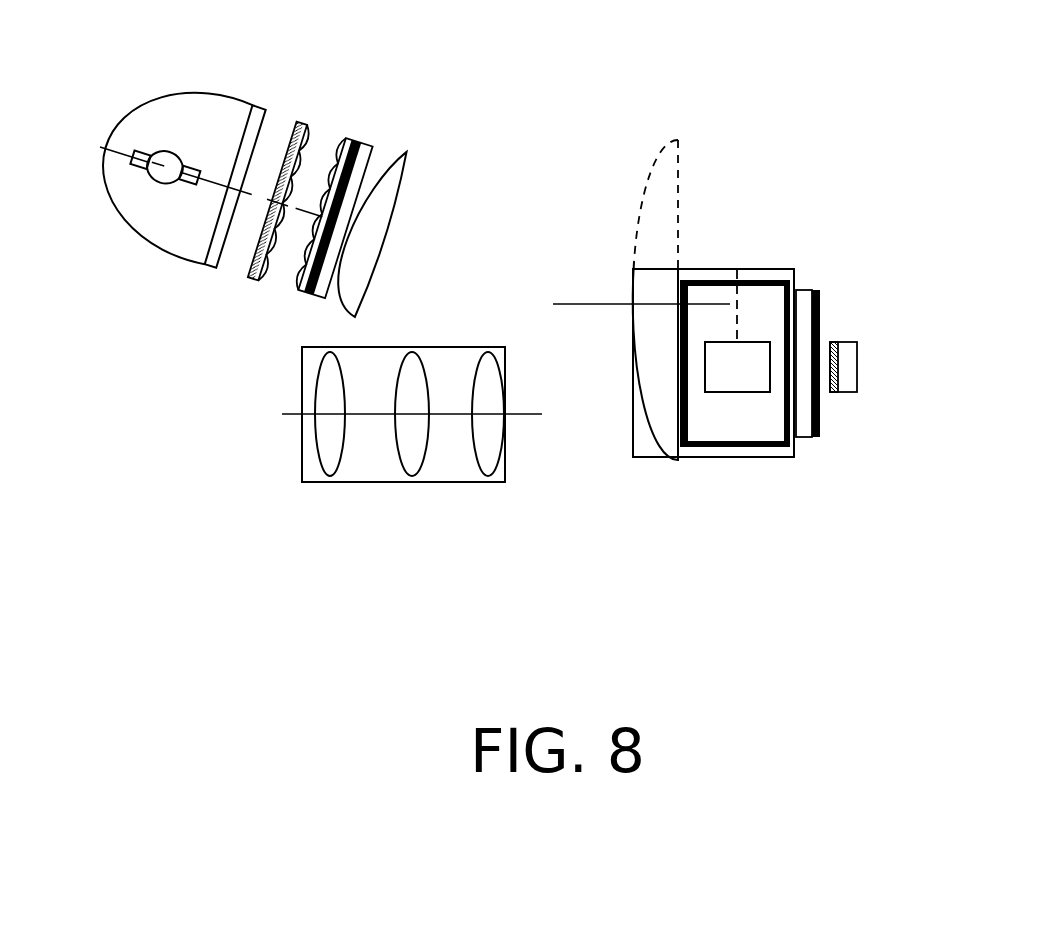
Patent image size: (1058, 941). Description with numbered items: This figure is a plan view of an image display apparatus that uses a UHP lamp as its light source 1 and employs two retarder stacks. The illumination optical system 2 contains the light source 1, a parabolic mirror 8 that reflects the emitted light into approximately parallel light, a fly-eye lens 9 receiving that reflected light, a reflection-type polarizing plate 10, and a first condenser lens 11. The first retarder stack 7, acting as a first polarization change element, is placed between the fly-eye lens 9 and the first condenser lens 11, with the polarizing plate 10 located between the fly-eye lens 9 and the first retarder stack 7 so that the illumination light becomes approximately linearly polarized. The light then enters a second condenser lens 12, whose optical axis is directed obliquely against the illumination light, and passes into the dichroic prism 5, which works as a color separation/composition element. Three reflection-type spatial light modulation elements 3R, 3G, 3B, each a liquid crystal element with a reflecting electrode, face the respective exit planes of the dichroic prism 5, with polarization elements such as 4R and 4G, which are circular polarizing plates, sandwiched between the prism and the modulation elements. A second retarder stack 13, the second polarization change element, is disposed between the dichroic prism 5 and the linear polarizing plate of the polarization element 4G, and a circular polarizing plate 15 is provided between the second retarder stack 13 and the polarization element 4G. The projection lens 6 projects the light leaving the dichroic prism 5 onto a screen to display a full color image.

The light source 1 is at (158, 177).
The illumination optical system 2 is at (196, 306).
The spatial light modulation element 3B is at (737, 270).
The spatial light modulation element 3R is at (717, 382).
The spatial light modulation element 3G is at (845, 362).
The polarization element 4R is at (737, 392).
The polarization element 4G is at (838, 396).
The dichroic prism 5 is at (773, 460).
The projection lens 6 is at (382, 468).
The first retarder stack 7 is at (318, 292).
The parabolic mirror 8 is at (132, 190).
The fly-eye lens 9 is at (358, 113).
The reflection-type polarizing plate 10 is at (348, 142).
The first condenser lens 11 is at (380, 183).
The second condenser lens 12 is at (660, 428).
The second retarder stack 13 is at (805, 302).
The circular polarizing plate 15 is at (818, 291).